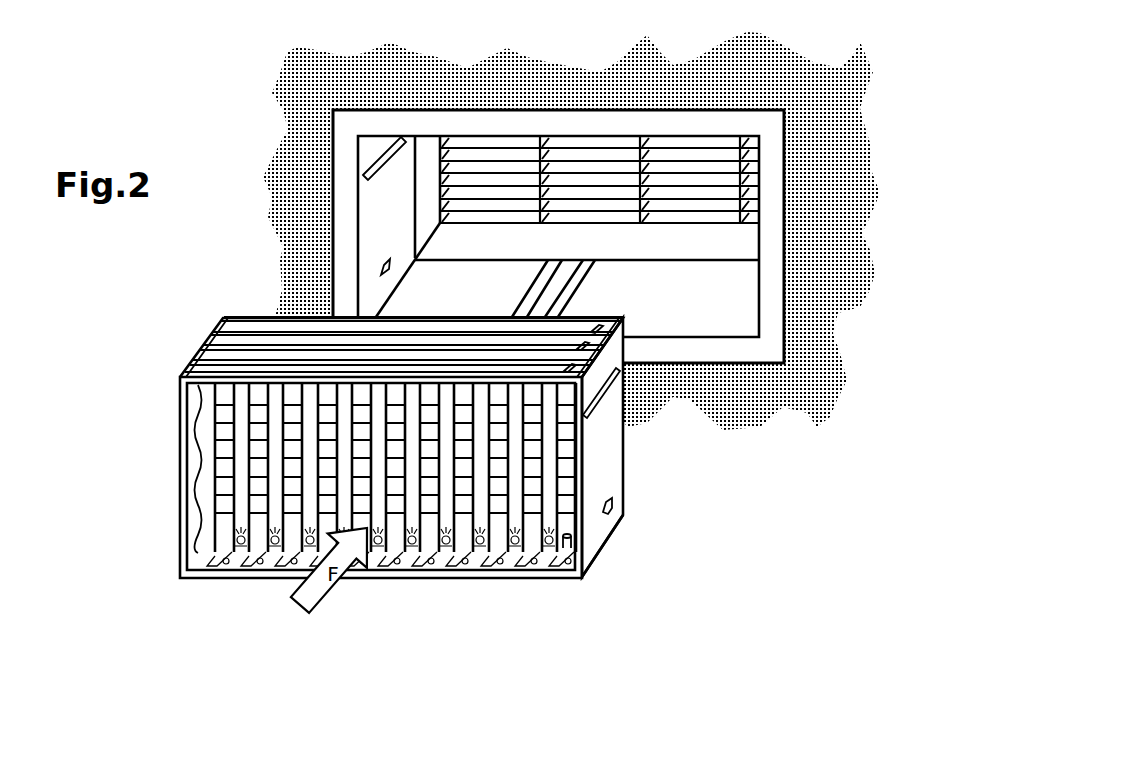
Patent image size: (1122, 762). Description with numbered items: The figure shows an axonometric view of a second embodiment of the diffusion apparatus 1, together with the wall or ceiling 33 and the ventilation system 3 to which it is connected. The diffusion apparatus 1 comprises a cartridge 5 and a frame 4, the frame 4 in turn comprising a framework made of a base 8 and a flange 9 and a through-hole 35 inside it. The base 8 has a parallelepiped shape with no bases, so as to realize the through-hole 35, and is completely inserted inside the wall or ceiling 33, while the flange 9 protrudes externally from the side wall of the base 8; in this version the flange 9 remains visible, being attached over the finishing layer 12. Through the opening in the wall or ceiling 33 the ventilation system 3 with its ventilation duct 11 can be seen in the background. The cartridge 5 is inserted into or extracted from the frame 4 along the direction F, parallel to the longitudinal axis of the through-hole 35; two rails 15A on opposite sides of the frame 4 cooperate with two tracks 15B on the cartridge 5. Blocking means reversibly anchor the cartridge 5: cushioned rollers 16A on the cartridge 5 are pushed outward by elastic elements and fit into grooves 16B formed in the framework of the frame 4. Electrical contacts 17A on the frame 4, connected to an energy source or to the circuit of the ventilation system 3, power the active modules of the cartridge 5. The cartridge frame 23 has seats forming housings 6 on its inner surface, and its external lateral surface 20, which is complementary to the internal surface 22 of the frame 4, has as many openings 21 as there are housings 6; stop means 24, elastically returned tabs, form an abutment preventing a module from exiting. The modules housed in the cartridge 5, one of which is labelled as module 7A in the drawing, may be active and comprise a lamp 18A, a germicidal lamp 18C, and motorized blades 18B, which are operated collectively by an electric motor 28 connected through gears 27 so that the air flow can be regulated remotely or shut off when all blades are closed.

The diffusion apparatus 1 is at (318, 247).
The ventilation system 3 is at (591, 165).
The frame 4 is at (400, 162).
The cartridge 5 is at (213, 590).
The housings 6 is at (210, 369).
The sealing element 7A is at (477, 560).
The base 8 is at (698, 312).
The flange 9 is at (768, 352).
The ventilation duct 11 is at (745, 250).
The finishing layer 12 is at (837, 243).
The rails 15A is at (367, 157).
The tracks 15B is at (633, 393).
The cushioned rollers 16A is at (612, 512).
The grooves 16B is at (365, 250).
The electrical contacts 17A is at (578, 268).
The lamp 18A is at (418, 533).
The motorized blades 18B is at (205, 475).
The germicidal lamp 18C is at (500, 550).
The external lateral surface 20 is at (590, 463).
The openings 21 is at (402, 347).
The internal surface 22 is at (379, 228).
The cartridge frame 23 is at (600, 548).
The stop means 24 is at (583, 383).
The gears 27 is at (553, 560).
The electric motor 28 is at (570, 548).
The wall or ceiling 33 is at (822, 282).
The through-hole 35 is at (630, 295).